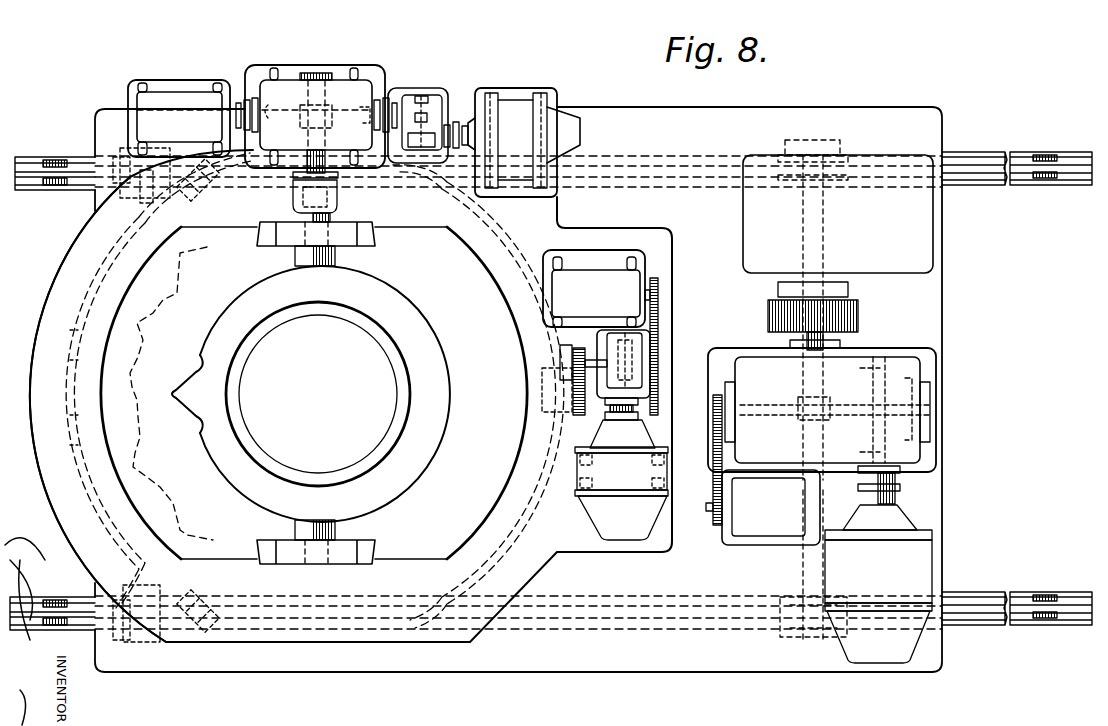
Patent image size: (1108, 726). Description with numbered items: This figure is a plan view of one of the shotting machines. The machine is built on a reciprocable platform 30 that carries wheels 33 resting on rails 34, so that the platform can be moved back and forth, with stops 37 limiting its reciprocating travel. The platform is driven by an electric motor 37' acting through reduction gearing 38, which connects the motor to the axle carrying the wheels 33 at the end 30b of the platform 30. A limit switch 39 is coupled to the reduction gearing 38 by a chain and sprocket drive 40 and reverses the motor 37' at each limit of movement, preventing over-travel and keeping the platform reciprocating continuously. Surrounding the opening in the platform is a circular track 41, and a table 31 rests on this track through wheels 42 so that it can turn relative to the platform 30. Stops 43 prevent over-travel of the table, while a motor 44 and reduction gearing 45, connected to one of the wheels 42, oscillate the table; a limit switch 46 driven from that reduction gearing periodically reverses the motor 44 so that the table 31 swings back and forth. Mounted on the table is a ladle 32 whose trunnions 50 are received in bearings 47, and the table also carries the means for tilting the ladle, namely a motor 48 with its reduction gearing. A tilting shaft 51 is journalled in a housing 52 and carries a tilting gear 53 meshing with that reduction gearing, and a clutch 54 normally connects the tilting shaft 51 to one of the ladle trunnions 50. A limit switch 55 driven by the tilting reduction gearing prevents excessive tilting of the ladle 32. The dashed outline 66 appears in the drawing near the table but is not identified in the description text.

The reciprocable platform 30 is at (560, 673).
The end of the platform 30b is at (942, 290).
The table 31 is at (31, 422).
The ladle 32 is at (440, 394).
The wheels 33 is at (112, 180).
The rails 34 is at (958, 165).
The stops 37 is at (551, 386).
The electric motor 37' is at (899, 564).
The reduction gearing 38 is at (918, 366).
The limit switch 39 is at (781, 525).
The chain and sprocket drive 40 is at (432, 102).
The circular track 41 is at (70, 394).
The wheels 42 is at (200, 190).
The stops 43 is at (74, 333).
The motor 44 is at (655, 466).
The reduction gearing 45 is at (637, 352).
The limit switch 46 is at (587, 278).
The bearings 47 is at (338, 243).
The motor 48 is at (508, 102).
The trunnions 50 is at (290, 238).
The tilting shaft 51 is at (353, 103).
The housing 52 is at (363, 80).
The tilting gear 53 is at (281, 101).
The clutch 54 is at (337, 200).
The limit switch 55 is at (165, 97).
The cam track 66 is at (118, 392).